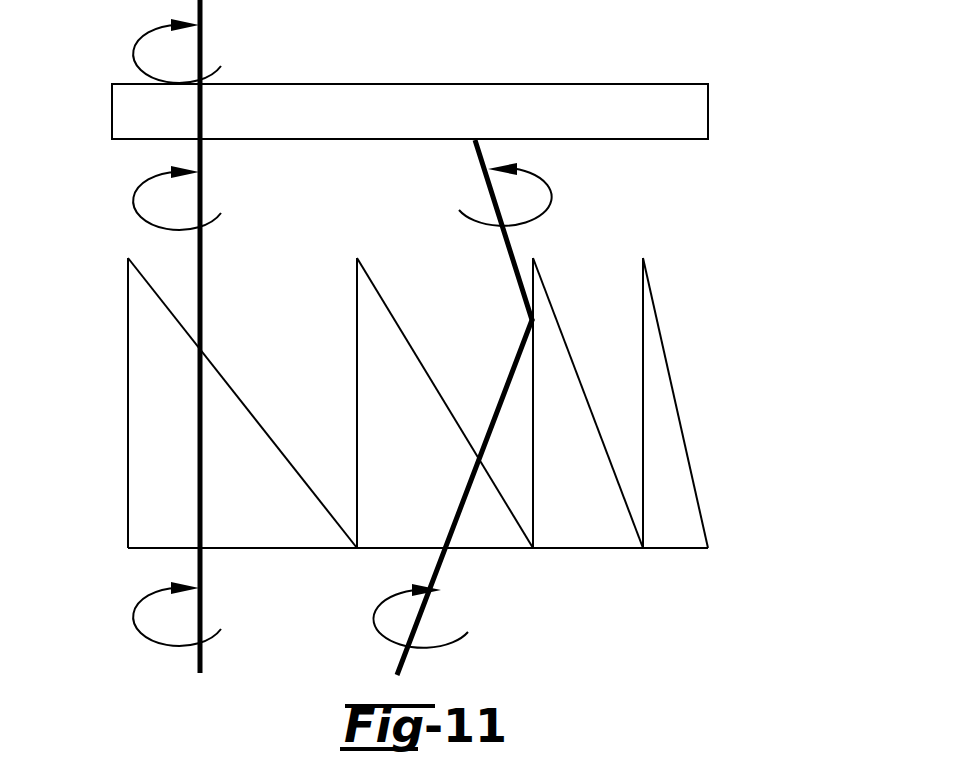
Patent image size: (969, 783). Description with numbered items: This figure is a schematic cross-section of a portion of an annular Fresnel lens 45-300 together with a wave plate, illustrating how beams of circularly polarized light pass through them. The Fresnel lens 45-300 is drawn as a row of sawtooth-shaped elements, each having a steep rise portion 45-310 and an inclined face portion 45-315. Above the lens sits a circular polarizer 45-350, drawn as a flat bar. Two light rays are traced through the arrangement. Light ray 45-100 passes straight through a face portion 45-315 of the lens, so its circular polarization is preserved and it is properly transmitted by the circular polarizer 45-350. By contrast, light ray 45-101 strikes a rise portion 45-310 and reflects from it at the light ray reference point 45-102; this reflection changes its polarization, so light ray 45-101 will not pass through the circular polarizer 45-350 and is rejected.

The light ray 45-100 is at (200, 660).
The light ray 45-101 is at (410, 662).
The light ray reference point 45-102 is at (530, 318).
The Fresnel lens 45-300 is at (677, 405).
The rise portion 45-310 is at (355, 292).
The face portion 45-315 is at (265, 430).
The circular polarizer 45-350 is at (658, 140).